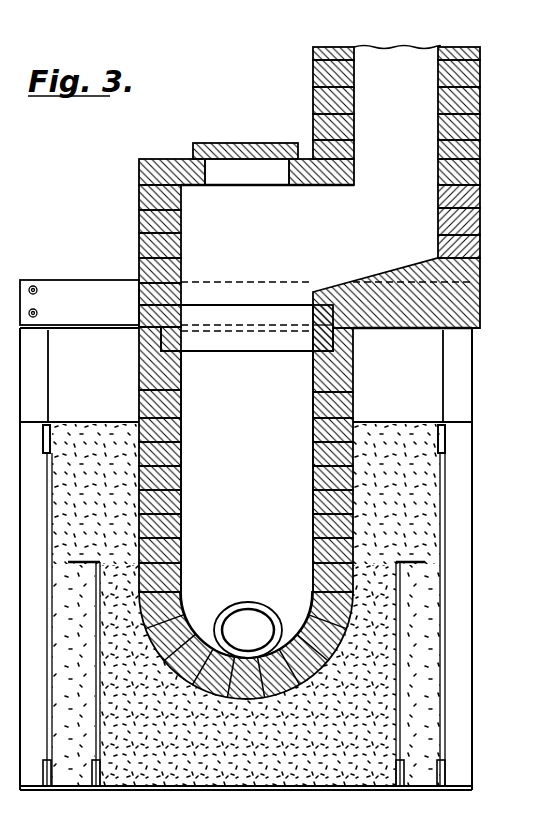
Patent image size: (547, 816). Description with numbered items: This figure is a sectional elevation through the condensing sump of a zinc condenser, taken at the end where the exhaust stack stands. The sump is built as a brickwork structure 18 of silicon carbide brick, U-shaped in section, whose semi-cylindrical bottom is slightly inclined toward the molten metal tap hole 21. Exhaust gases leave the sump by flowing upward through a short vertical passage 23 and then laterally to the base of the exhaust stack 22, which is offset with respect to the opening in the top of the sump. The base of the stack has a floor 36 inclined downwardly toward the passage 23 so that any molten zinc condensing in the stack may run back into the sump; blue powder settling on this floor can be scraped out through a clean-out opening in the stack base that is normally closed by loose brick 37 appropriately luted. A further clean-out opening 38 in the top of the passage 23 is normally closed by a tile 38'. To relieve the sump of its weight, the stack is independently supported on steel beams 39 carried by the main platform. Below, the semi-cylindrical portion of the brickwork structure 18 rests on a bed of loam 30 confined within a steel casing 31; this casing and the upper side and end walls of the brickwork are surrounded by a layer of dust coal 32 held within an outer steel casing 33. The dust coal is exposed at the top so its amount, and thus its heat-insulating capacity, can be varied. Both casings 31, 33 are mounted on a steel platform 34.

The brickwork structure 18 is at (172, 507).
The molten metal tap hole 21 is at (258, 612).
The exhaust stack 22 is at (412, 108).
The vertical passage 23 is at (247, 504).
The bed of loam 30 is at (348, 733).
The steel casing 31 is at (398, 697).
The layer of dust coal 32 is at (425, 600).
The steel casing 33 is at (447, 636).
The steel platform 34 is at (428, 792).
The floor 36 is at (388, 271).
The loose brick 37 is at (470, 222).
The clean-out opening 38 is at (267, 189).
The tile 38' is at (245, 130).
The steel beams 39 is at (255, 330).